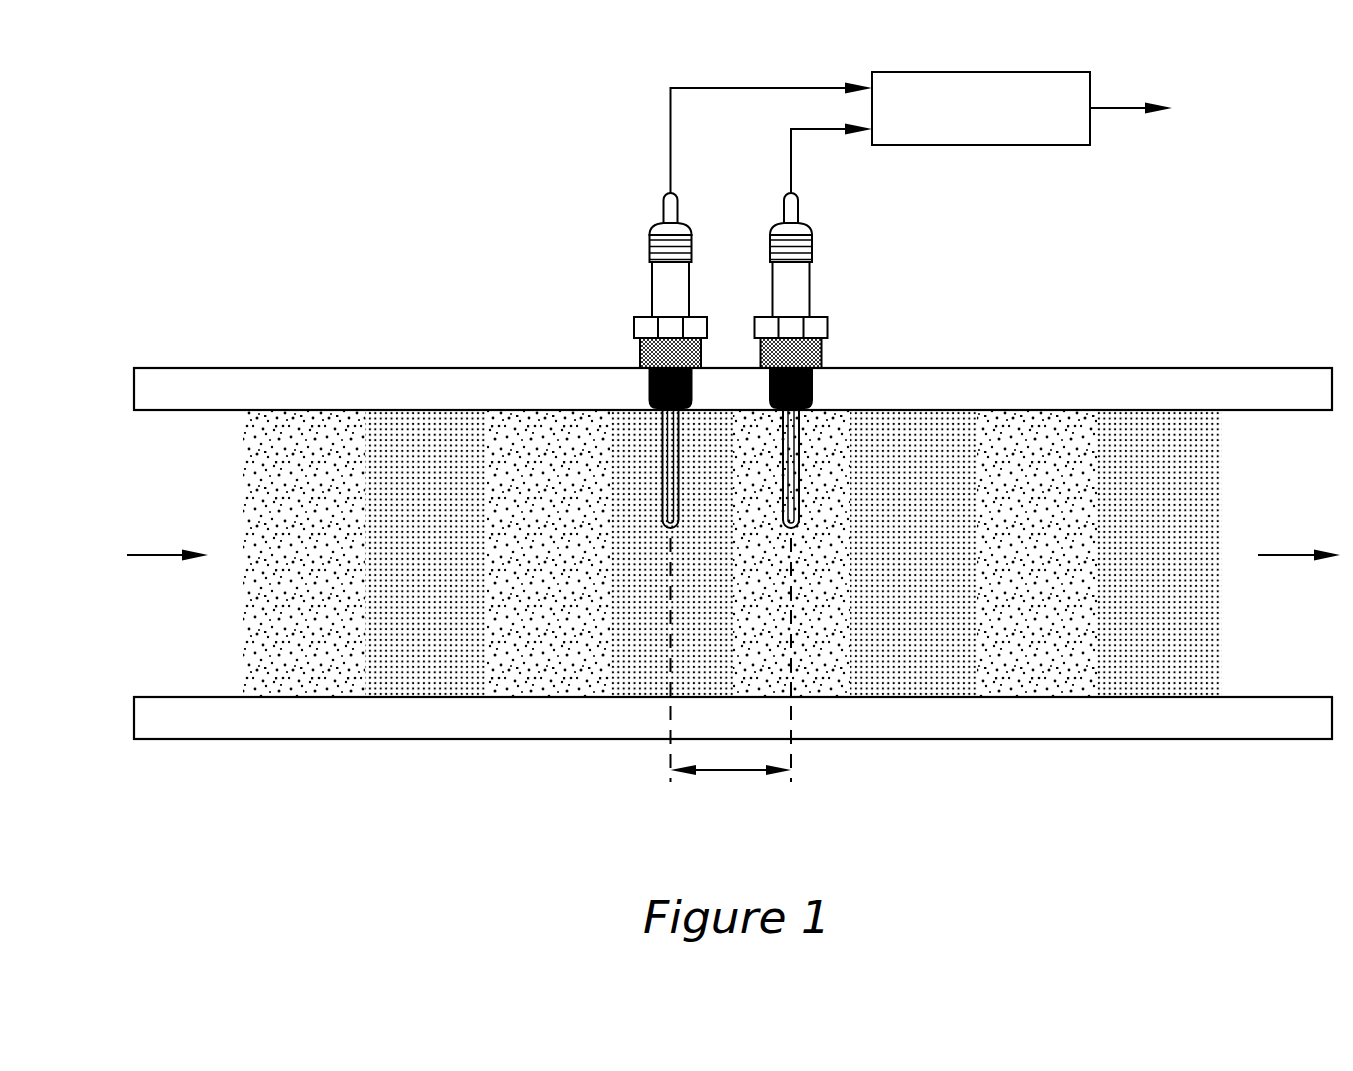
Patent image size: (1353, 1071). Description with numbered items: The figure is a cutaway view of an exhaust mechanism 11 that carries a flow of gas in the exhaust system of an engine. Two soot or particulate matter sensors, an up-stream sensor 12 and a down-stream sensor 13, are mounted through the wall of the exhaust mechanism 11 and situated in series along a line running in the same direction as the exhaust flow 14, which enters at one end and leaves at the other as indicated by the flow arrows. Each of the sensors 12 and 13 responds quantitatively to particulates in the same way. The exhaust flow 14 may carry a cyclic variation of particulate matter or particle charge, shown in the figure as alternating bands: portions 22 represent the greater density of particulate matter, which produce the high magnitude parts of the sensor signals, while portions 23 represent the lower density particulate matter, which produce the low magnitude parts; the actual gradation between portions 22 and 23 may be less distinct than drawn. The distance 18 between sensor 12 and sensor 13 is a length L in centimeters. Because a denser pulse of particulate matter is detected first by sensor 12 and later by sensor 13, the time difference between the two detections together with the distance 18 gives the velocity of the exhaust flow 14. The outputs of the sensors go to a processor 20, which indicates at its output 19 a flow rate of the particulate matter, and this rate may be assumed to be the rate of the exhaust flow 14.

The exhaust mechanism 11 is at (440, 377).
The up-stream sensor 12 is at (653, 287).
The down-stream sensor 13 is at (808, 288).
The exhaust flow 14 is at (153, 555).
The distance 18 is at (730, 772).
The output 19 is at (1117, 105).
The processor 20 is at (982, 72).
The portions of greater PM density 22 is at (428, 683).
The portions of lower PM density 23 is at (550, 683).